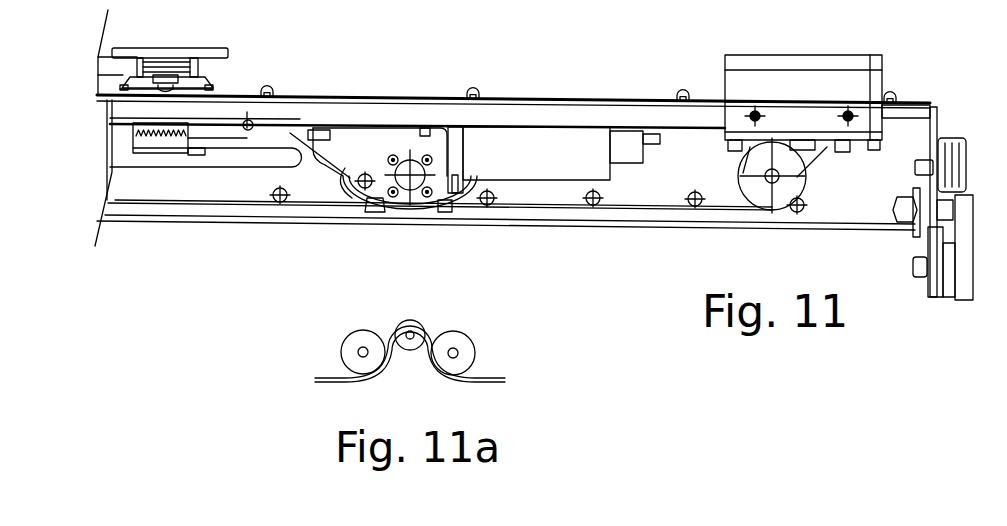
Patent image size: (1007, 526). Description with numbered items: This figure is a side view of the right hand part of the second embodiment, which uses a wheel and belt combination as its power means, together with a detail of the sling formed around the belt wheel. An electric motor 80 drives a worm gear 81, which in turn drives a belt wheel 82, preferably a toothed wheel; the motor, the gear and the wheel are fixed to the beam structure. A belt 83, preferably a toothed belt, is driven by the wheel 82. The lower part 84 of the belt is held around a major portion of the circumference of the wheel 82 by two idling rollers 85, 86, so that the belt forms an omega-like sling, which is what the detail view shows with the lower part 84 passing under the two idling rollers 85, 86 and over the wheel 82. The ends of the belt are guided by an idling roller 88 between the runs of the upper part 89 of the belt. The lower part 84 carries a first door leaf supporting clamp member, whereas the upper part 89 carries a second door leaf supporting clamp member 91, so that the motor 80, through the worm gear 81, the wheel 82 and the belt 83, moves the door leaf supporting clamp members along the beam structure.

In FIG. 11, the electric motor 80 is at (547, 165).
In FIG. 11, the worm gear 81 is at (404, 136).
In FIG. 11, the belt wheel 82 is at (418, 212).
In FIG. 11A, the belt wheel 82 is at (415, 332).
In FIG. 11, the belt 83 is at (230, 208).
In FIG. 11, the lower part of the belt 84 is at (303, 210).
In FIG. 11A, the lower part of the belt 84 is at (330, 377).
In FIG. 11, the idling roller 85 is at (353, 208).
In FIG. 11A, the idling roller 85 is at (355, 347).
In FIG. 11, the idling roller 86 is at (472, 207).
In FIG. 11A, the idling roller 86 is at (470, 350).
In FIG. 11, the idling roller 88 is at (737, 169).
In FIG. 11, the upper part of the belt 89 is at (290, 133).
In FIG. 11, the second door leaf supporting clamp member 91 is at (172, 158).